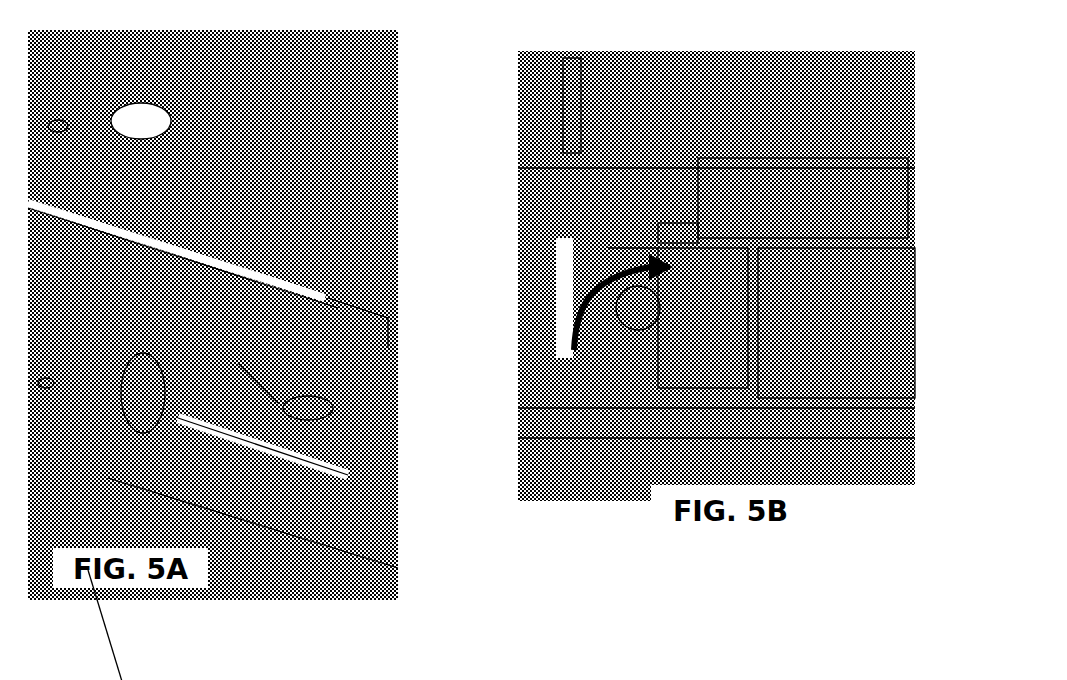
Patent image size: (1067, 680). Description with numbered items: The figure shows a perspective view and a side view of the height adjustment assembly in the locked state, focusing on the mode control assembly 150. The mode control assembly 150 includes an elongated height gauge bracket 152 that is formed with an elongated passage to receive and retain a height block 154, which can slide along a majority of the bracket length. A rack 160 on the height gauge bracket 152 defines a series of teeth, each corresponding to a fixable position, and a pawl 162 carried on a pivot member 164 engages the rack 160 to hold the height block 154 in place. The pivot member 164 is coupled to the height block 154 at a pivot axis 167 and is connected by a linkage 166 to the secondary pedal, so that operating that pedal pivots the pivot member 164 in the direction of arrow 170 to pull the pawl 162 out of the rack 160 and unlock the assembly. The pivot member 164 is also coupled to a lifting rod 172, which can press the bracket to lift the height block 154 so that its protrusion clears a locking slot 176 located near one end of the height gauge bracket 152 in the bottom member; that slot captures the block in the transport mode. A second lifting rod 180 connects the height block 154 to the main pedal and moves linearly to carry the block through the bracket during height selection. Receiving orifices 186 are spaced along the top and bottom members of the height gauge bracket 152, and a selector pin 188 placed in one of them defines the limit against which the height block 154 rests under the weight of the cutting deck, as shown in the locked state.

In FIG. 5A, the mode control assembly 150 is at (245, 540).
In FIG. 5B, the mode control assembly 150 is at (803, 482).
In FIG. 5A, the height gauge bracket 152 is at (352, 205).
In FIG. 5B, the height gauge bracket 152 is at (553, 163).
In FIG. 5B, the height block 154 is at (617, 242).
In FIG. 5B, the rack 160 is at (720, 200).
In FIG. 5B, the pawl 162 is at (677, 218).
In FIG. 5A, the pivot member 164 is at (172, 352).
In FIG. 5B, the pivot member 164 is at (712, 307).
In FIG. 5A, the linkage 166 is at (377, 530).
In FIG. 5B, the linkage 166 is at (852, 407).
In FIG. 5B, the pivot axis 167 is at (628, 303).
In FIG. 5B, the arrow 170 is at (560, 332).
In FIG. 5A, the lifting rod 172 is at (248, 375).
In FIG. 5A, the locking slot 176 is at (322, 406).
In FIG. 5A, the lifting rod 180 is at (371, 338).
In FIG. 5B, the lifting rod 180 is at (820, 277).
In FIG. 5A, the receiving orifices 186 is at (58, 104).
In FIG. 5A, the selector pin 188 is at (148, 122).
In FIG. 5B, the selector pin 188 is at (563, 128).